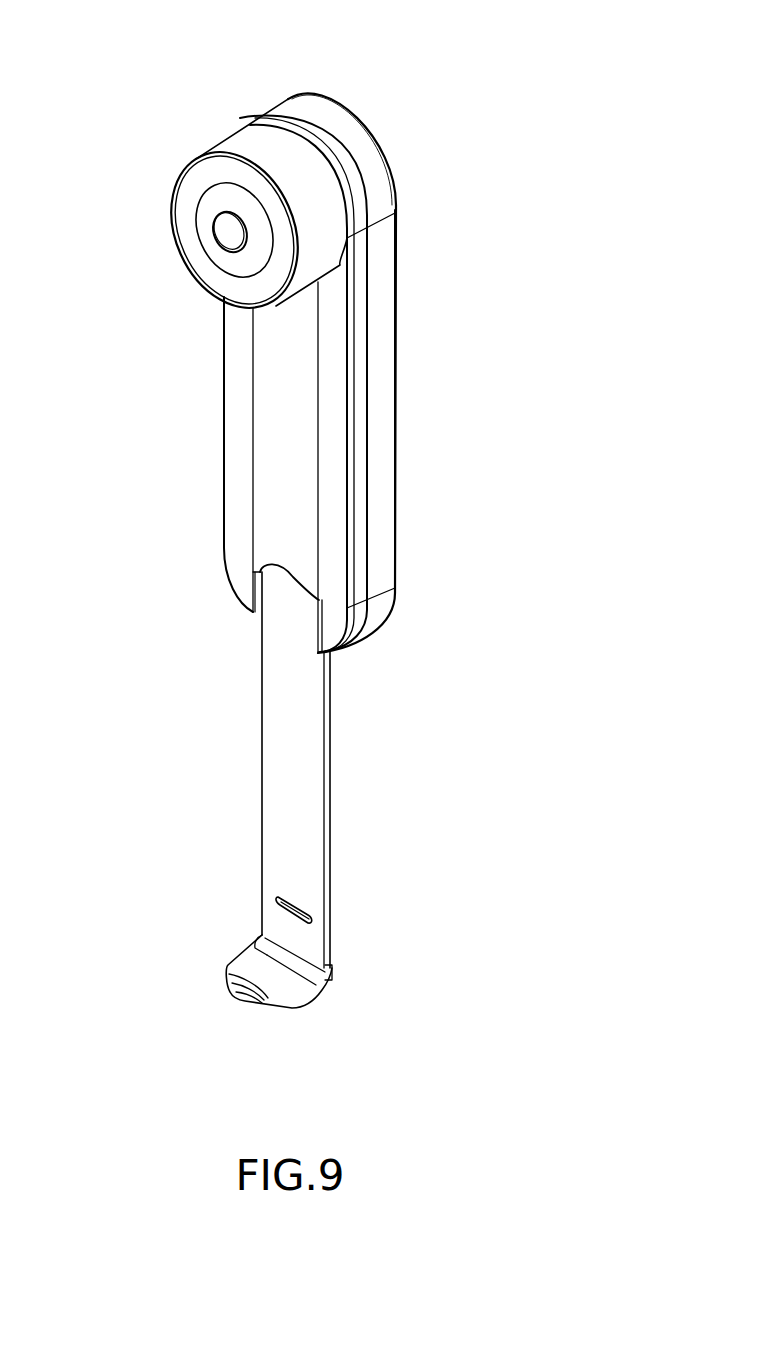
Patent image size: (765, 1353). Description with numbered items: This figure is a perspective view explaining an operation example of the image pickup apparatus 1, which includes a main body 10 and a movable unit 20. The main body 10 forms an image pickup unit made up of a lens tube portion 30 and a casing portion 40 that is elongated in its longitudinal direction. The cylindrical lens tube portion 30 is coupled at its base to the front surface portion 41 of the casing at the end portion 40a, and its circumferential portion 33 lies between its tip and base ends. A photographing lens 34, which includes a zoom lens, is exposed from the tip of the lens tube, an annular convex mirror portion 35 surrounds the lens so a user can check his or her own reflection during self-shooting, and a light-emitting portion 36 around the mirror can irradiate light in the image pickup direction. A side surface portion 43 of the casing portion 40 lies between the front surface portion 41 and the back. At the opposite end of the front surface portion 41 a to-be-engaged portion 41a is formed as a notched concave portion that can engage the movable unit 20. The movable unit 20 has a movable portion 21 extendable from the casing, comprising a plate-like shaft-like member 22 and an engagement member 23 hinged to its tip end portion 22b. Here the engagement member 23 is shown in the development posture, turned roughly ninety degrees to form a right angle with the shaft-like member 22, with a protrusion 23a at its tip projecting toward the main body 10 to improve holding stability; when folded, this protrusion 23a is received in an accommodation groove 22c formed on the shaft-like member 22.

The image pickup apparatus 1 is at (505, 62).
The main body 10 is at (115, 277).
The lens tube portion 30 is at (192, 266).
The circumferential portion 33 is at (231, 142).
The photographing lens 34 is at (227, 230).
The convex mirror portion 35 is at (212, 200).
The light-emitting portion 36 is at (207, 170).
The casing portion 40 is at (238, 362).
The end portion 40a is at (307, 98).
The front surface portion 41 is at (273, 467).
The to-be-engaged portion 41a is at (300, 582).
The side surface portion 43 is at (378, 408).
The movable unit 20 is at (201, 664).
The movable portion 21 is at (172, 835).
The shaft-like member 22 is at (272, 853).
The tip end portion 22b is at (335, 964).
The accommodation groove 22c is at (303, 905).
The engagement member 23 is at (245, 966).
The protrusion 23a is at (240, 1000).